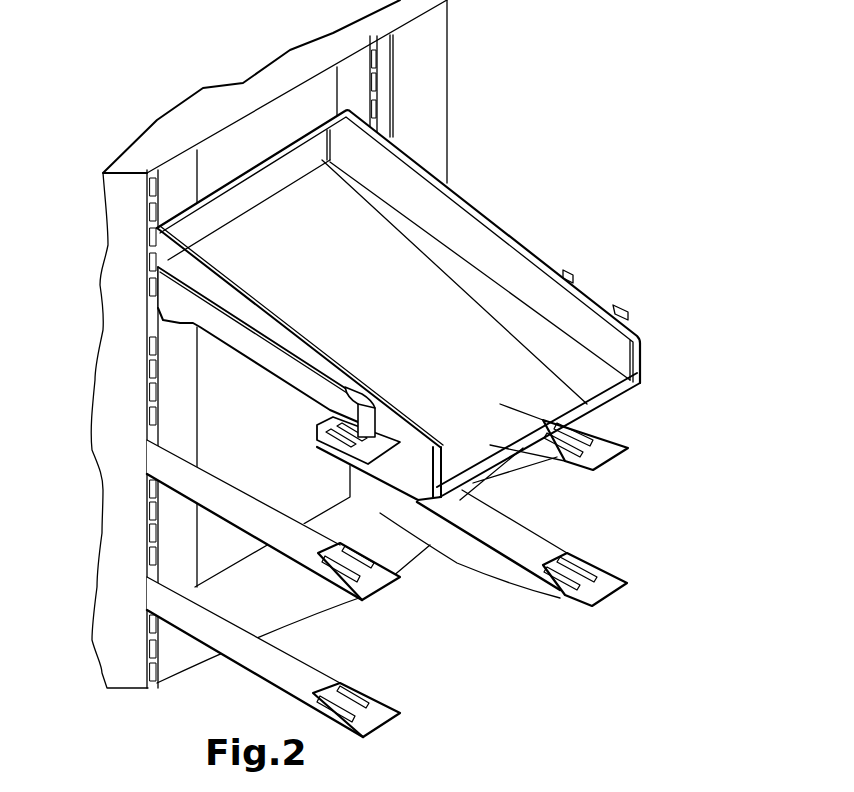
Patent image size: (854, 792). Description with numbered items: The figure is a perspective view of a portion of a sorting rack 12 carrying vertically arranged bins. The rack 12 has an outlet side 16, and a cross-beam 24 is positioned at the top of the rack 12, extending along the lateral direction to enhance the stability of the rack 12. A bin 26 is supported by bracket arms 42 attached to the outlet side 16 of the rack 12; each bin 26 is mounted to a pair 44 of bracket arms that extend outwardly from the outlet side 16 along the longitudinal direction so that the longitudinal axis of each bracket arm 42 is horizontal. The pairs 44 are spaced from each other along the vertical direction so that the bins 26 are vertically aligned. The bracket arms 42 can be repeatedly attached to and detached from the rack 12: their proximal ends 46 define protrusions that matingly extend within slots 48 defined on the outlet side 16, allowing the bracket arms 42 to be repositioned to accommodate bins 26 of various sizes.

The sorting wall 12 is at (123, 430).
The outlet side 16 is at (447, 57).
The cross-beam 24 is at (285, 75).
The bin 26 is at (423, 323).
The bracket arm 42 is at (613, 583).
The pair of bracket arms 44 is at (622, 307).
The proximal end 46 is at (153, 417).
The slot 48 is at (152, 262).